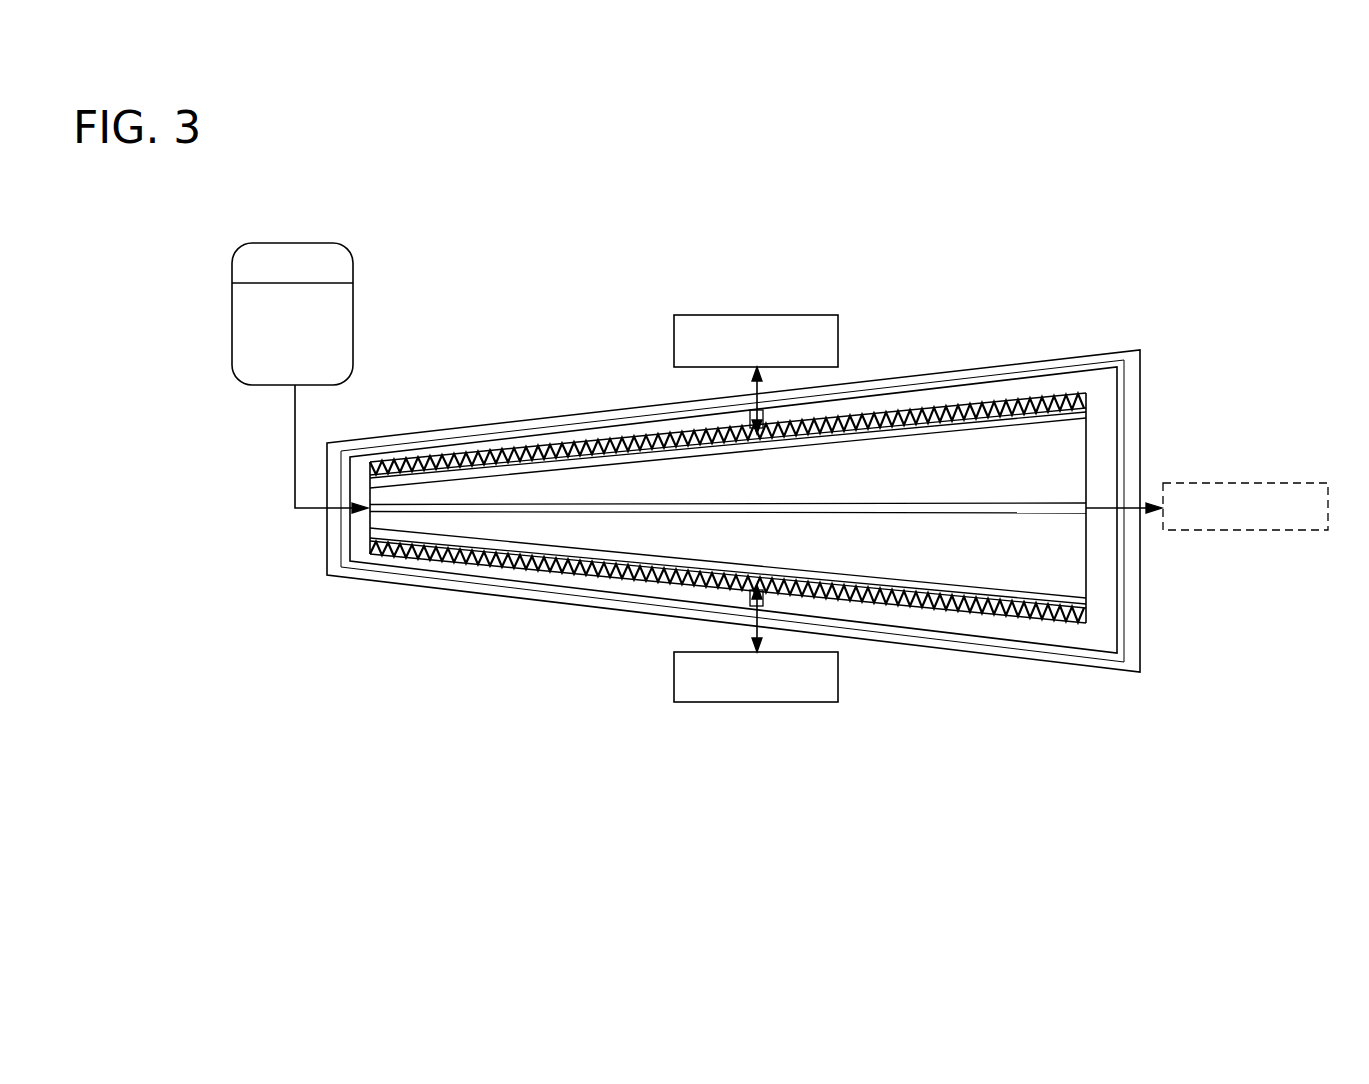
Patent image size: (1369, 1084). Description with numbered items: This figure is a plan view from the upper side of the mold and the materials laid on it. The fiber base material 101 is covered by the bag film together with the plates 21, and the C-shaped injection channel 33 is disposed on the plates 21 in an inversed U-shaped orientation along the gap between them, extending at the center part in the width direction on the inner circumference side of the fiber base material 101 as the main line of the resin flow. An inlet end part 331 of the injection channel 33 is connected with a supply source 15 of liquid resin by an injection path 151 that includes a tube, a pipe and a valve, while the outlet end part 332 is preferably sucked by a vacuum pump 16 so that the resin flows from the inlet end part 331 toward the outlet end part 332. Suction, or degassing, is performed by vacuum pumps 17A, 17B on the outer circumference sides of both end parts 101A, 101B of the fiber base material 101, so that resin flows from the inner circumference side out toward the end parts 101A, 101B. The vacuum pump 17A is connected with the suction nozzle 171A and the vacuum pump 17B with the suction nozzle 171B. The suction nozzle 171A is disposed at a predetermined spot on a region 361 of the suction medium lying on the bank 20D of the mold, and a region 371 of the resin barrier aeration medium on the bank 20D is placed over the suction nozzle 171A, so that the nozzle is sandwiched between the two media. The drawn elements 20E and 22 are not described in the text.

The supply source 15 is at (296, 243).
The injection path 151 is at (293, 444).
The vacuum pump 16 is at (1244, 483).
The vacuum pump 17A is at (803, 703).
The vacuum pump 17B is at (782, 314).
The suction nozzle 171A is at (765, 599).
The suction nozzle 171B is at (764, 420).
The bank 20D is at (545, 578).
The upper mold 20E is at (518, 437).
The plate 21 is at (665, 538).
The upper sheet 22 is at (666, 485).
The injection channel 33 is at (953, 503).
The inlet end part 331 is at (367, 505).
The outlet end part 332 is at (1088, 508).
The fiber base material 101 is at (600, 484).
The end part 101A is at (935, 612).
The end part 101B is at (975, 424).
The region of the suction medium 361 is at (1033, 395).
The region of the resin barrier aeration medium 371 is at (1026, 618).